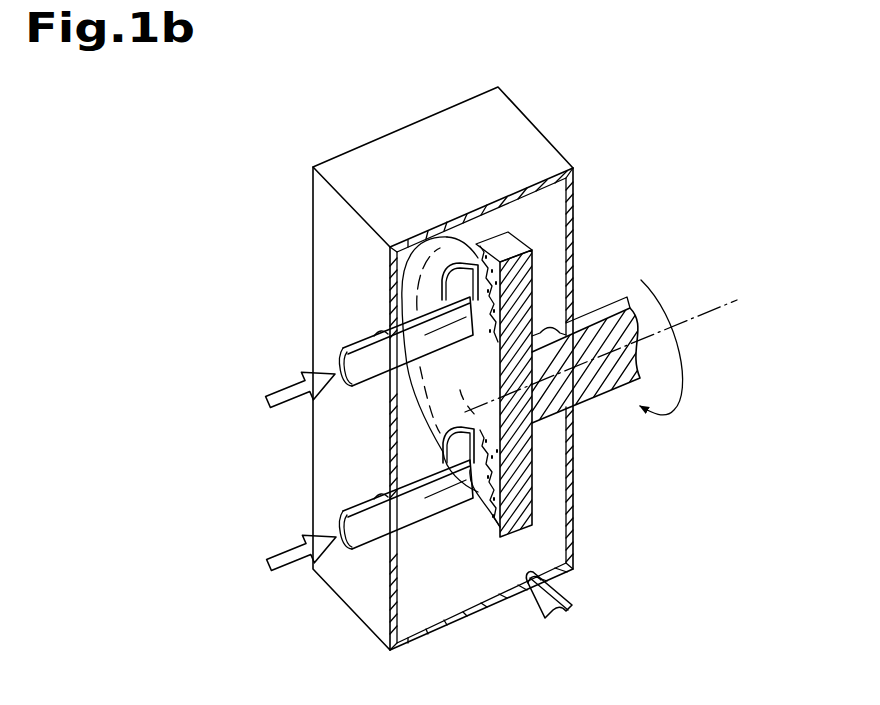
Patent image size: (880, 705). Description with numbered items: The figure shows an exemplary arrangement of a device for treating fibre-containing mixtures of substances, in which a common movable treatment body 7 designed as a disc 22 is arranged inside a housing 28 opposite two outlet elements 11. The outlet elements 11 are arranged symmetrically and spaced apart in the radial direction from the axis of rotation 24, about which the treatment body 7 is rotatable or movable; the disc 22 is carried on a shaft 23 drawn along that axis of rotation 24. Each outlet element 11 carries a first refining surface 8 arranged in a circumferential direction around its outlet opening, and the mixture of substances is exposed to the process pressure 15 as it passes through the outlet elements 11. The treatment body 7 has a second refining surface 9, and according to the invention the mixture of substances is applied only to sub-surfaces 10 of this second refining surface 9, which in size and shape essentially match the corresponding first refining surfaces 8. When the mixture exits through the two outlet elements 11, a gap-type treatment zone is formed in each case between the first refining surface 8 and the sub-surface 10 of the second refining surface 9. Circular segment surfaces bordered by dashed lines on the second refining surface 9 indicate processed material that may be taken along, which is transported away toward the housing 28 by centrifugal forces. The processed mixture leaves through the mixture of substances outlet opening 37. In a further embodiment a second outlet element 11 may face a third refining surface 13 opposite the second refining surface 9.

The treatment body 7 is at (605, 405).
The disc 22 is at (518, 462).
The first refining surface 8 is at (481, 302).
The second refining surface 9 is at (447, 250).
The sub-surfaces 10 is at (485, 295).
The outlet element 11 is at (362, 340).
The third refining surface 13 is at (530, 275).
The process pressure 15 is at (276, 393).
The shaft 23 is at (685, 382).
The axis of rotation 24 is at (691, 316).
The housing 28 is at (362, 587).
The mixture of substances outlet opening 37 is at (588, 592).